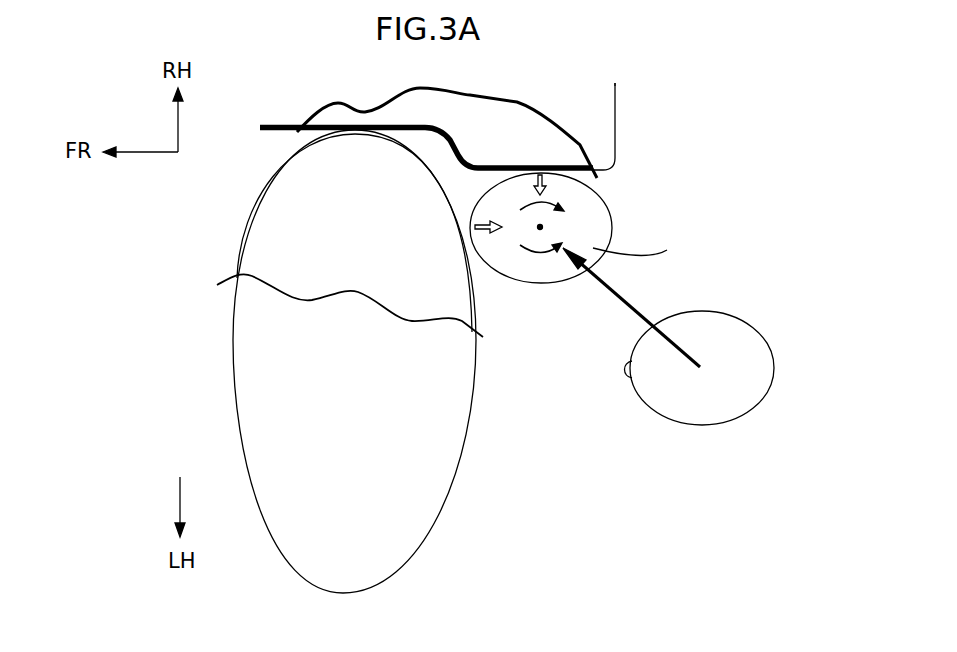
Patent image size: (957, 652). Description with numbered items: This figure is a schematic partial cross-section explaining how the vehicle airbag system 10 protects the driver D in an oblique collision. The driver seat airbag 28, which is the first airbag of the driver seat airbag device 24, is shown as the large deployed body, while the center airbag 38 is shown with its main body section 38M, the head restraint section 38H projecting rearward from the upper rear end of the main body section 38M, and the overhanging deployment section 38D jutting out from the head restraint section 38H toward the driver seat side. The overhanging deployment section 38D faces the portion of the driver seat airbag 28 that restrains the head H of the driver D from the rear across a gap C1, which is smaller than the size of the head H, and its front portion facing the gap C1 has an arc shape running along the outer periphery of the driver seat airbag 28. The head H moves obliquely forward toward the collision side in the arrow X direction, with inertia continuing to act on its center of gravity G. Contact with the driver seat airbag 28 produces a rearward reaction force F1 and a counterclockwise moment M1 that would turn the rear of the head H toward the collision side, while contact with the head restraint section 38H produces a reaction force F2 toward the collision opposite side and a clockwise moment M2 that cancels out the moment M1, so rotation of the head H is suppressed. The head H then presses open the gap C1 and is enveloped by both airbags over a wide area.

The vehicle airbag system 10 is at (660, 78).
The driver seat airbag device 24 is at (354, 233).
The driver seat airbag 28 is at (432, 500).
The center airbag 38 is at (626, 142).
The head restraint section 38H is at (603, 112).
The overhanging deployment section 38D is at (600, 166).
The main body section 38M is at (283, 115).
The gap C1 is at (427, 150).
The driver D is at (525, 300).
The center of gravity G is at (545, 227).
The head H is at (690, 323).
The arrow X direction X is at (620, 302).
The reaction force F1 is at (489, 240).
The reaction force F2 is at (526, 188).
The counterclockwise moment M1 is at (538, 259).
The clockwise moment M2 is at (559, 209).